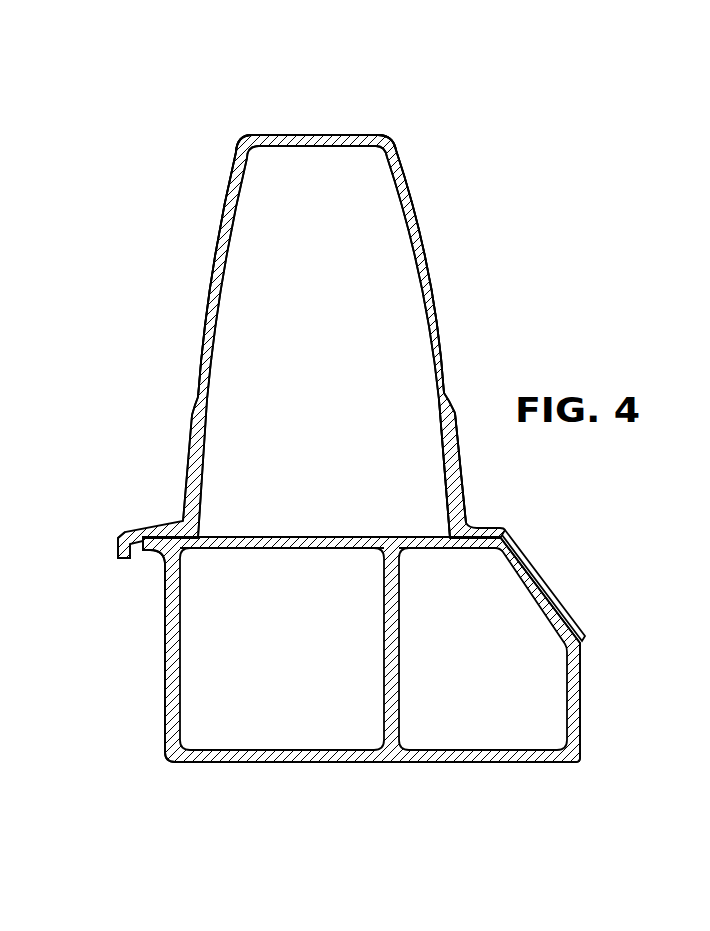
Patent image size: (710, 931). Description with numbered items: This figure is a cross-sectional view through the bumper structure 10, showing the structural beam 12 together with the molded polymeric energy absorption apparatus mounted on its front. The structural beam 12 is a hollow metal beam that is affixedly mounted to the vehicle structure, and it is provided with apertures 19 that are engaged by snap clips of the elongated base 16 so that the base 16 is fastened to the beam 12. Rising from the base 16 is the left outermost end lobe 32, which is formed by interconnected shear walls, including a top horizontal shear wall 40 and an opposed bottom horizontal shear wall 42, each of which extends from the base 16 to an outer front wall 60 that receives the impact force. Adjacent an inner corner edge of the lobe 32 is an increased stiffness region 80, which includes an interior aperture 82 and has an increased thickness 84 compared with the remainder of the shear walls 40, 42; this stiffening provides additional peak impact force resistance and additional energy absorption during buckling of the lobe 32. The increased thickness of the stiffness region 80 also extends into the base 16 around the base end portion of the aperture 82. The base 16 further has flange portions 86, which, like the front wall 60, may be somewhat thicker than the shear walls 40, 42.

The bumper structure 10 is at (589, 776).
The structural beam 12 is at (335, 749).
The base 16 is at (150, 527).
The apertures 19 is at (105, 259).
The left outermost end lobe 32 is at (414, 139).
The top horizontal shear wall 40 is at (210, 286).
The bottom horizontal shear wall 42 is at (432, 273).
The outer front wall 60 is at (315, 135).
The increased stiffness region 80 is at (465, 480).
The interior aperture 82 is at (188, 422).
The increased thickness 84 is at (188, 456).
The flange portions 86 is at (543, 573).